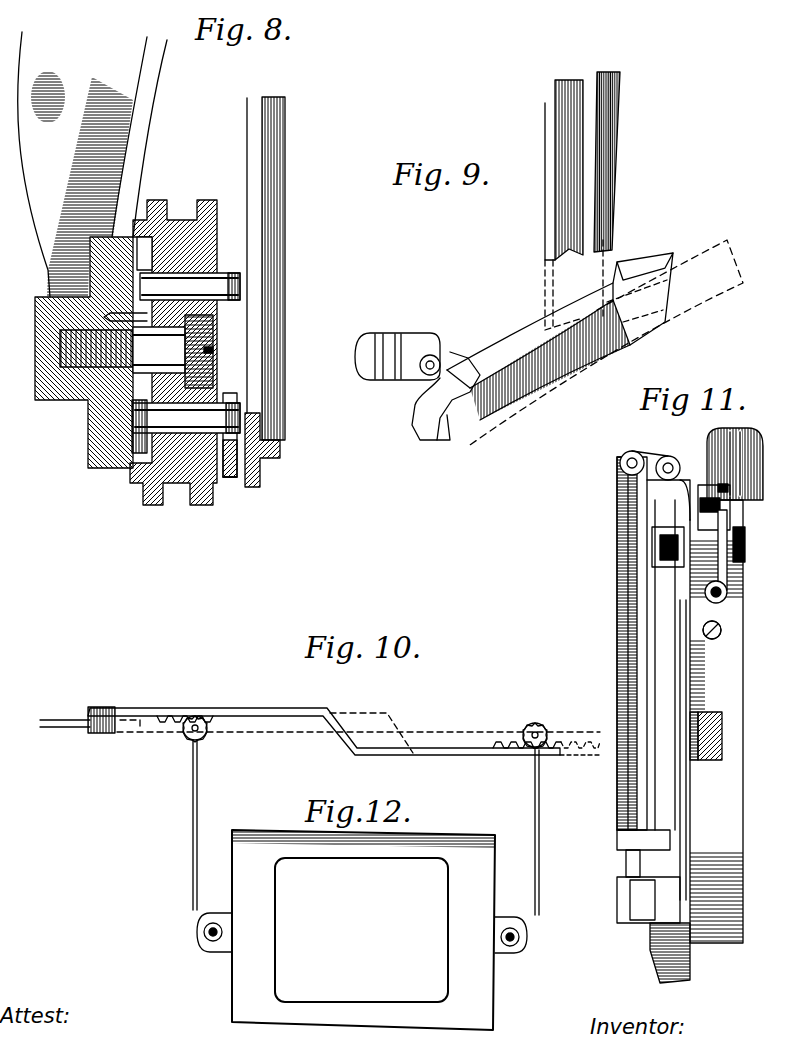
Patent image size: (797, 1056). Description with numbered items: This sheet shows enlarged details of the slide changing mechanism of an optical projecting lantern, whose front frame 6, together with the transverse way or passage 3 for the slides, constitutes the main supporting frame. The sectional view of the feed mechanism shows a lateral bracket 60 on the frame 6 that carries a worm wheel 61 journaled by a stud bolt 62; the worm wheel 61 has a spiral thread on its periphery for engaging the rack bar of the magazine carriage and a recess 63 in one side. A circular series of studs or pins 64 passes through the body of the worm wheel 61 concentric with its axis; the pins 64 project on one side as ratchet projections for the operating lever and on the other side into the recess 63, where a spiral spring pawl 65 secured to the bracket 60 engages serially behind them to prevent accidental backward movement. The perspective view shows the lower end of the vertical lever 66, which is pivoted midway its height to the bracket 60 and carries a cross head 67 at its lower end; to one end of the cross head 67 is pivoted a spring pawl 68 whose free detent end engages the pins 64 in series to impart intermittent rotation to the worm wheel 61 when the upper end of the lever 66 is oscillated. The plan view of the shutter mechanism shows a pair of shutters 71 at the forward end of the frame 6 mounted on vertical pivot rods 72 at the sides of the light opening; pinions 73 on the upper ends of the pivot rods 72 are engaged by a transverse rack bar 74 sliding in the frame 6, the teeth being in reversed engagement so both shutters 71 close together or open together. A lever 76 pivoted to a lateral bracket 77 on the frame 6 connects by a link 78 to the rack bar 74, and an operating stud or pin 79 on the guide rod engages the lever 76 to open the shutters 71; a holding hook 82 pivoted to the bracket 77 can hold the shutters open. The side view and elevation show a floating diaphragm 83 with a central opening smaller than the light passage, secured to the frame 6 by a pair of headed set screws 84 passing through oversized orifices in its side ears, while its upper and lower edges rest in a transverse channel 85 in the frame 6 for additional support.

In FIG. 10, the transverse way or passage 3 is at (594, 801).
In FIG. 11, the front frame 6 is at (711, 711).
In FIG. 8, the lateral bracket 60 is at (92, 164).
In FIG. 8, the worm wheel 61 is at (208, 213).
In FIG. 8, the stud bolt 62 is at (122, 350).
In FIG. 8, the recess 63 is at (168, 220).
In FIG. 8, the studs or pins 64 is at (230, 300).
In FIG. 8, the spiral spring pawl 65 is at (133, 428).
In FIG. 8, the vertical lever 66 is at (280, 137).
In FIG. 9, the vertical lever 66 is at (612, 150).
In FIG. 8, the cross head 67 is at (262, 470).
In FIG. 9, the cross head 67 is at (447, 430).
In FIG. 8, the spring pawl 68 is at (232, 480).
In FIG. 9, the spring pawl 68 is at (515, 345).
In FIG. 10, the shutters 71 is at (190, 822).
In FIG. 10, the vertical pivot rods 72 is at (199, 740).
In FIG. 10, the pinions 73 is at (187, 740).
In FIG. 10, the transverse rack bar 74 is at (205, 717).
In FIG. 11, the lever 76 is at (723, 560).
In FIG. 11, the lateral bracket 77 is at (683, 532).
In FIG. 10, the link 78 is at (55, 728).
In FIG. 11, the operating stud or pin 79 is at (703, 445).
In FIG. 11, the holding hook 82 is at (700, 510).
In FIG. 11, the floating diaphragm 83 is at (683, 795).
In FIG. 12, the floating diaphragm 83 is at (363, 930).
In FIG. 11, the headed set screws 84 is at (695, 715).
In FIG. 12, the headed set screws 84 is at (208, 937).
In FIG. 11, the transverse channel 85 is at (660, 570).